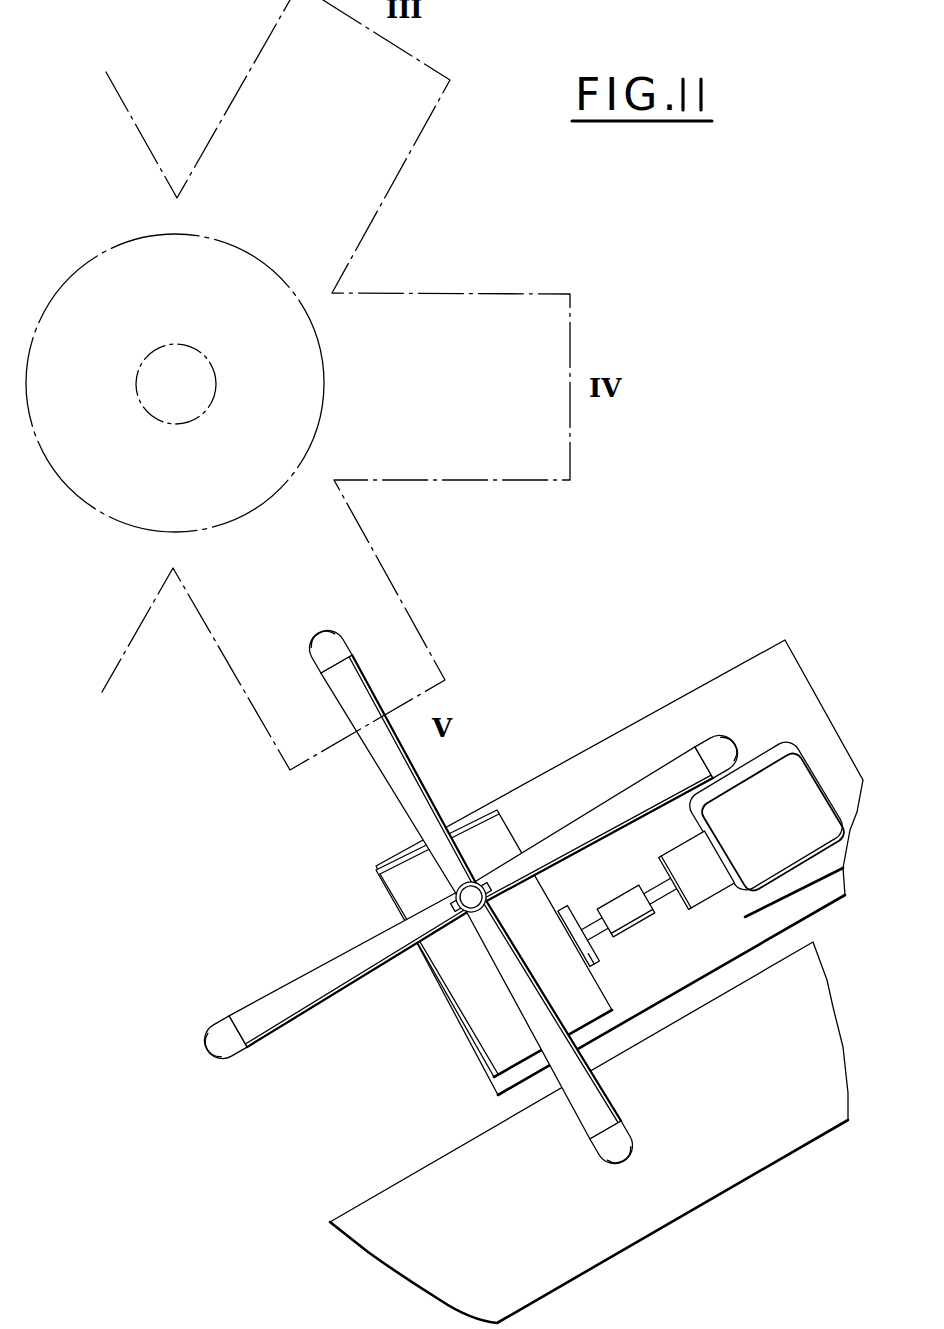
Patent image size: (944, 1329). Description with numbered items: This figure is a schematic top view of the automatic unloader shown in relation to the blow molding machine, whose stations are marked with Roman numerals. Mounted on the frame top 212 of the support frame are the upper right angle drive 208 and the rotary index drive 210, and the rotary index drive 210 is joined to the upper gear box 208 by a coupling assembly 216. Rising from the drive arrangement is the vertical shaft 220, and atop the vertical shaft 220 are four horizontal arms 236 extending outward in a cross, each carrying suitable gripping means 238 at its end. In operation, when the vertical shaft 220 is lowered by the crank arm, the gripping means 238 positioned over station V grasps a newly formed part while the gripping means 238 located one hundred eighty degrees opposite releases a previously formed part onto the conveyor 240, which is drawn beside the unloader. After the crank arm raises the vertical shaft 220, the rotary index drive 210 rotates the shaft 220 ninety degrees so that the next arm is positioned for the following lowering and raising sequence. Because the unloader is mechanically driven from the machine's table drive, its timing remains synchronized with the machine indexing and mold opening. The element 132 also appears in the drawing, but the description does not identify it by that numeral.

The rotary station 132 is at (190, 370).
The upper right angle drive 208 is at (782, 740).
The rotary index drive 210 is at (500, 1052).
The frame top 212 is at (584, 766).
The coupling assembly 216 is at (627, 917).
The vertical shaft 220 is at (484, 902).
The horizontal arms 236 is at (580, 837).
The gripping means 238 is at (323, 637).
The conveyor 240 is at (393, 1208).